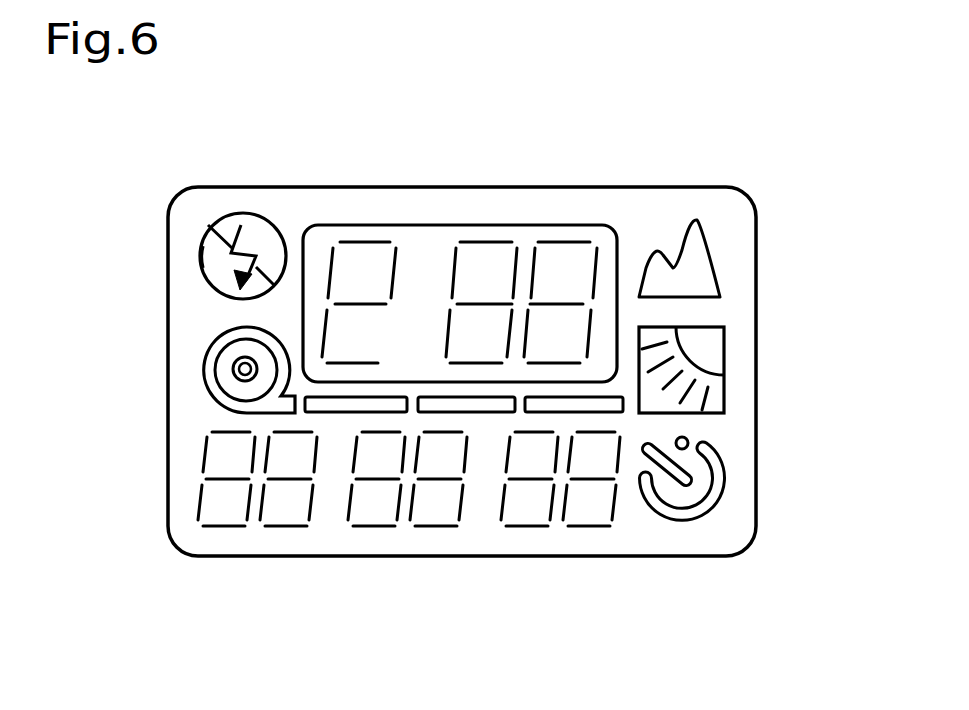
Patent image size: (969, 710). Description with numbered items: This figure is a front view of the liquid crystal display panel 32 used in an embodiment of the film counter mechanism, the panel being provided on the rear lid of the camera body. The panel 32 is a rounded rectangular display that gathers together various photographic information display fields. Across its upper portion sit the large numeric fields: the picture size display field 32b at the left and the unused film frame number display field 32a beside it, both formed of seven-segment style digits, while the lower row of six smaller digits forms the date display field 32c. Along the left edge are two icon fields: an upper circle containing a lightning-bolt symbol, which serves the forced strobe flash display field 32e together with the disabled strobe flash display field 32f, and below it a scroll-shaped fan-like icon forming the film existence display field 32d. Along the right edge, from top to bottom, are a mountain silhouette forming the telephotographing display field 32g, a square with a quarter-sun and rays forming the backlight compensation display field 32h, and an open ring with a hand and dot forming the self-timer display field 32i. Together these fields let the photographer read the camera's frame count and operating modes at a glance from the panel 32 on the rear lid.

The liquid crystal display panel 32 is at (588, 158).
The unused film frame number display field 32a is at (481, 260).
The picture size display field 32b is at (358, 260).
The date display field 32c is at (438, 513).
The film existence display field 32d is at (202, 392).
The forced strobe flash display field 32e is at (262, 217).
The disabled strobe flash display field 32f is at (203, 260).
The telephotographing display field 32g is at (700, 273).
The backlight compensation display field 32h is at (707, 357).
The self-timer display field 32i is at (722, 492).